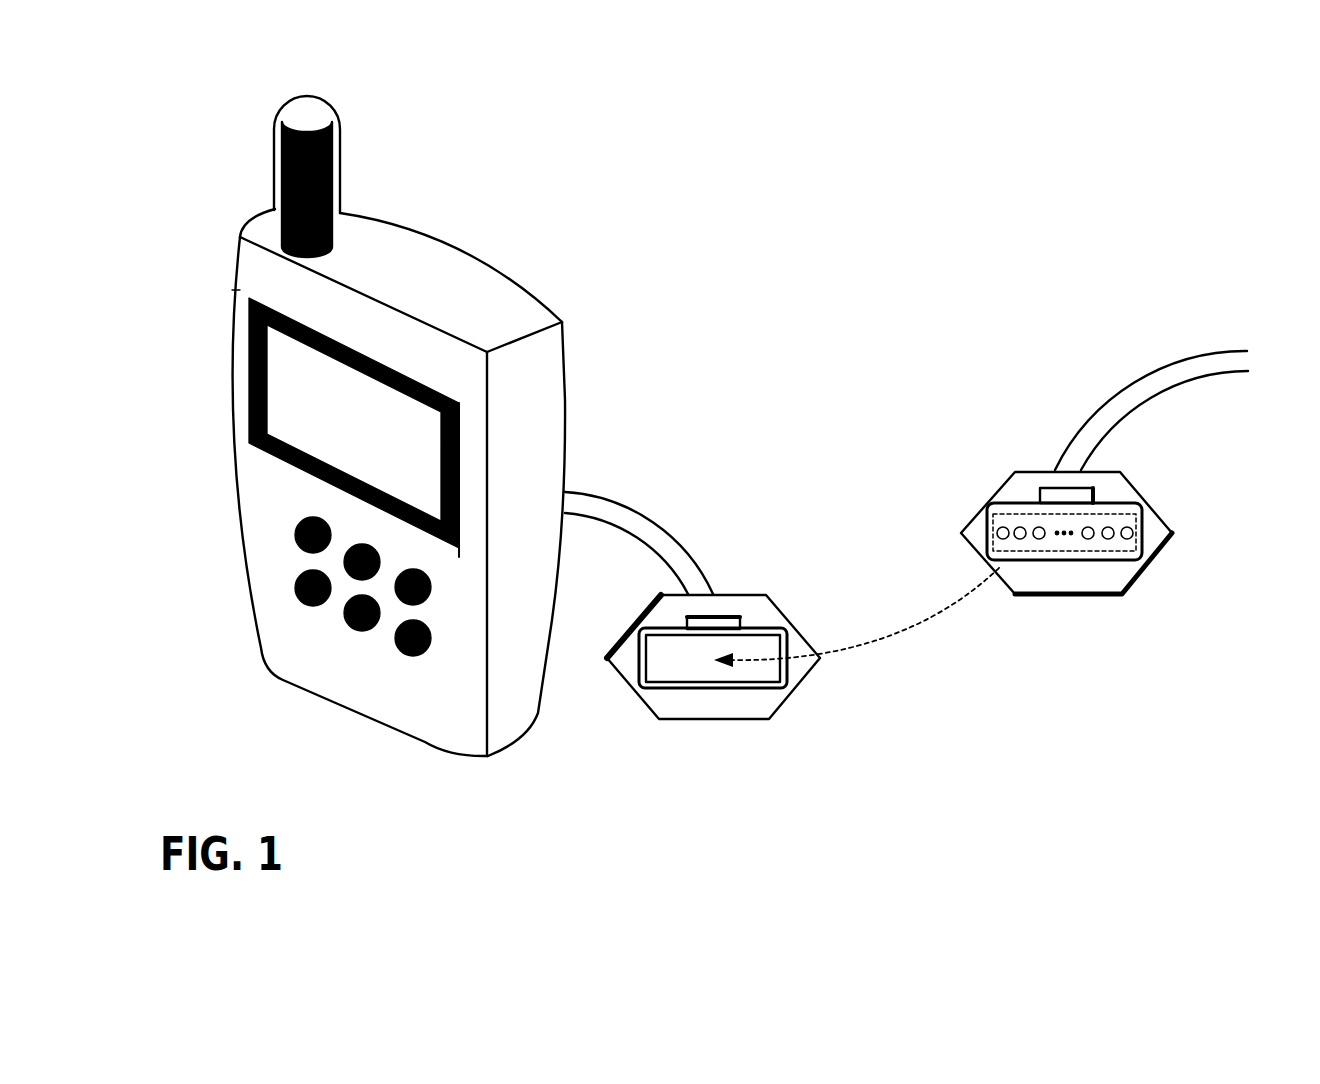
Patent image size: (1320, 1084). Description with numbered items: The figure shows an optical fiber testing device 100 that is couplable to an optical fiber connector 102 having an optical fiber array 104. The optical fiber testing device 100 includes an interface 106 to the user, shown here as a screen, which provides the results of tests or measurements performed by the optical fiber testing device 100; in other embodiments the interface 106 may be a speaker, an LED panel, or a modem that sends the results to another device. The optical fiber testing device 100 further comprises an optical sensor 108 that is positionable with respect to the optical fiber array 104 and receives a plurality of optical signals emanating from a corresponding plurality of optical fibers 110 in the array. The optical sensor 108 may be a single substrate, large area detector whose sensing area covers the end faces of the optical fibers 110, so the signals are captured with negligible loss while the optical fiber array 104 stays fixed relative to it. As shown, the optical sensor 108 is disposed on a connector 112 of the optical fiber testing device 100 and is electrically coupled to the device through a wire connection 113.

The optical fiber testing device 100 is at (250, 612).
The optical fiber connector 102 is at (1067, 498).
The optical fiber array 104 is at (1123, 552).
The interface 106 is at (248, 418).
The optical sensor 108 is at (653, 685).
The optical fibers 110 is at (1002, 528).
The connector 112 is at (720, 674).
The wire connection 113 is at (667, 527).